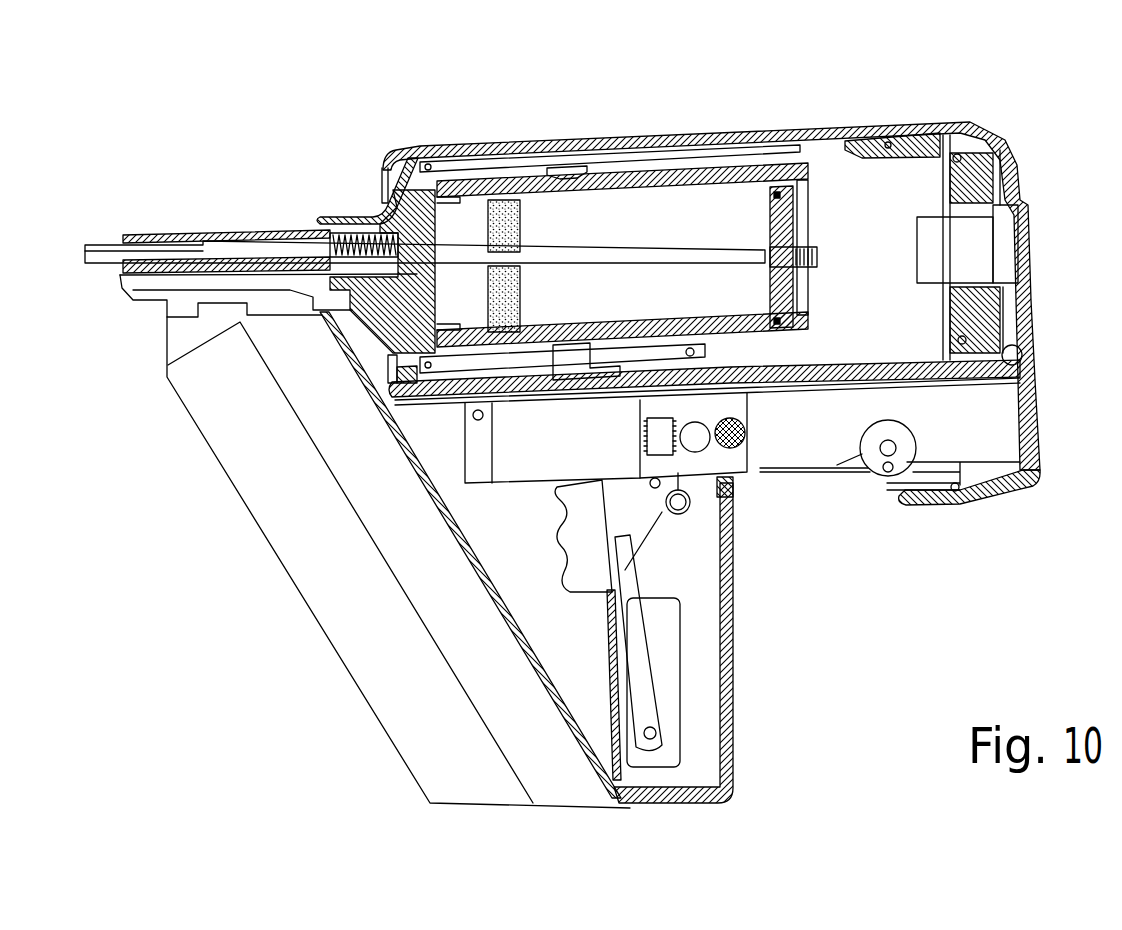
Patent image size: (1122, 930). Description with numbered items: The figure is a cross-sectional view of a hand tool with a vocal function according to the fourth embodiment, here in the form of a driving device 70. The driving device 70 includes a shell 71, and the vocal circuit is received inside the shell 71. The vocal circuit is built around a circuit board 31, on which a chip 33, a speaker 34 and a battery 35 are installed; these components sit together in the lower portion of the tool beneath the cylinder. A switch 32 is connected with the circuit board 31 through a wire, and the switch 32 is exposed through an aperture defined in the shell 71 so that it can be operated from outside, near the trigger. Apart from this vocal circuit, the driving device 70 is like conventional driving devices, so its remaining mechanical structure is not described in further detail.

The driving device 70 is at (760, 118).
The shell 71 is at (1034, 222).
The circuit board 31 is at (732, 398).
The switch 32 is at (668, 520).
The chip 33 is at (660, 442).
The speaker 34 is at (738, 446).
The battery 35 is at (698, 440).